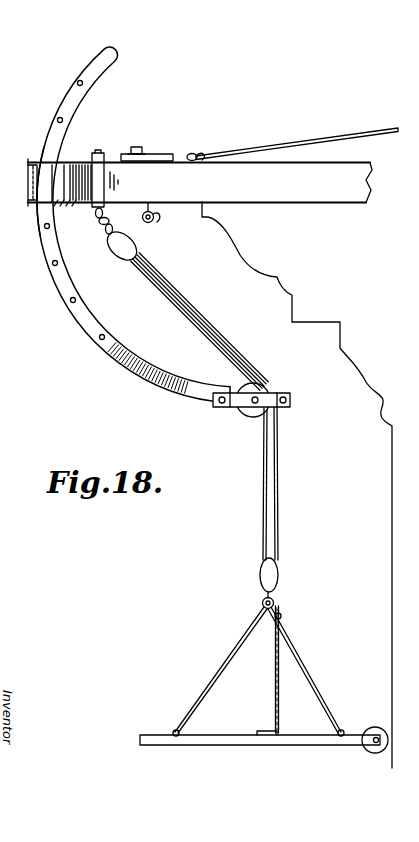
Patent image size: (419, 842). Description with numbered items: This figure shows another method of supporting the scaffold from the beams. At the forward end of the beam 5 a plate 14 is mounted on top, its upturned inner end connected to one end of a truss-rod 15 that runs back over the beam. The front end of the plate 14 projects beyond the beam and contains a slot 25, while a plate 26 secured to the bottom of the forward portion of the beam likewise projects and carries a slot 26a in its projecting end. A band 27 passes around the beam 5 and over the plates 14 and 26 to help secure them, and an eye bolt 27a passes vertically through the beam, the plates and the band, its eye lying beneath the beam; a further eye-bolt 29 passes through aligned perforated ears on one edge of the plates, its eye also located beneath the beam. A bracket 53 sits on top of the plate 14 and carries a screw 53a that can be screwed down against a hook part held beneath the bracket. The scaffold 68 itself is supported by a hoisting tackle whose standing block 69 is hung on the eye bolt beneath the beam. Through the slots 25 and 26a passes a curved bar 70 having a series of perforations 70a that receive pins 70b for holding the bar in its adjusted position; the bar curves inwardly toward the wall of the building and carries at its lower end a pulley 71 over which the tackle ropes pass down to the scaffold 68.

The beam 5 is at (340, 188).
The plate 14 is at (76, 160).
The truss-rod 15 is at (287, 143).
The slot 25 is at (57, 162).
The plate 26 is at (73, 204).
The slot 26a is at (37, 208).
The band 27 is at (100, 168).
The eye bolt 27a is at (94, 221).
The eye-bolt 29 is at (199, 311).
The bracket 53 is at (147, 156).
The screw 53a is at (136, 148).
The scaffold 68 is at (162, 736).
The standing block 69 is at (118, 251).
The curved bar 70 is at (90, 325).
The perforations 70a is at (77, 84).
The pins 70b is at (42, 158).
The pulley 71 is at (262, 388).